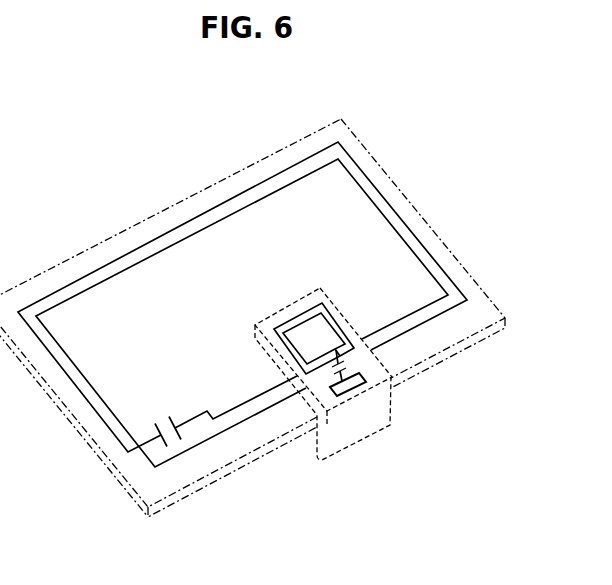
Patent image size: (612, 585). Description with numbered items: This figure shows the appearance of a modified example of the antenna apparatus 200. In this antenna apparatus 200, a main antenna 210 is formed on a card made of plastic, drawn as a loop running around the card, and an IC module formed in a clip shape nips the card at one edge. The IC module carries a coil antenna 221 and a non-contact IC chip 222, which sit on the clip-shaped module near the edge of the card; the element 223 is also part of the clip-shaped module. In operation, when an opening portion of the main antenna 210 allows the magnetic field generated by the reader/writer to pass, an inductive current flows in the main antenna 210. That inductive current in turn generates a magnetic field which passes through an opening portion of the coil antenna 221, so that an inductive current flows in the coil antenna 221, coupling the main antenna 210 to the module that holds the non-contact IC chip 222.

The antenna apparatus 200 is at (163, 212).
The main antenna 210 is at (384, 198).
The coil antenna 221 is at (346, 321).
The non-contact IC chip 222 is at (358, 391).
The module substrate 223 is at (356, 444).